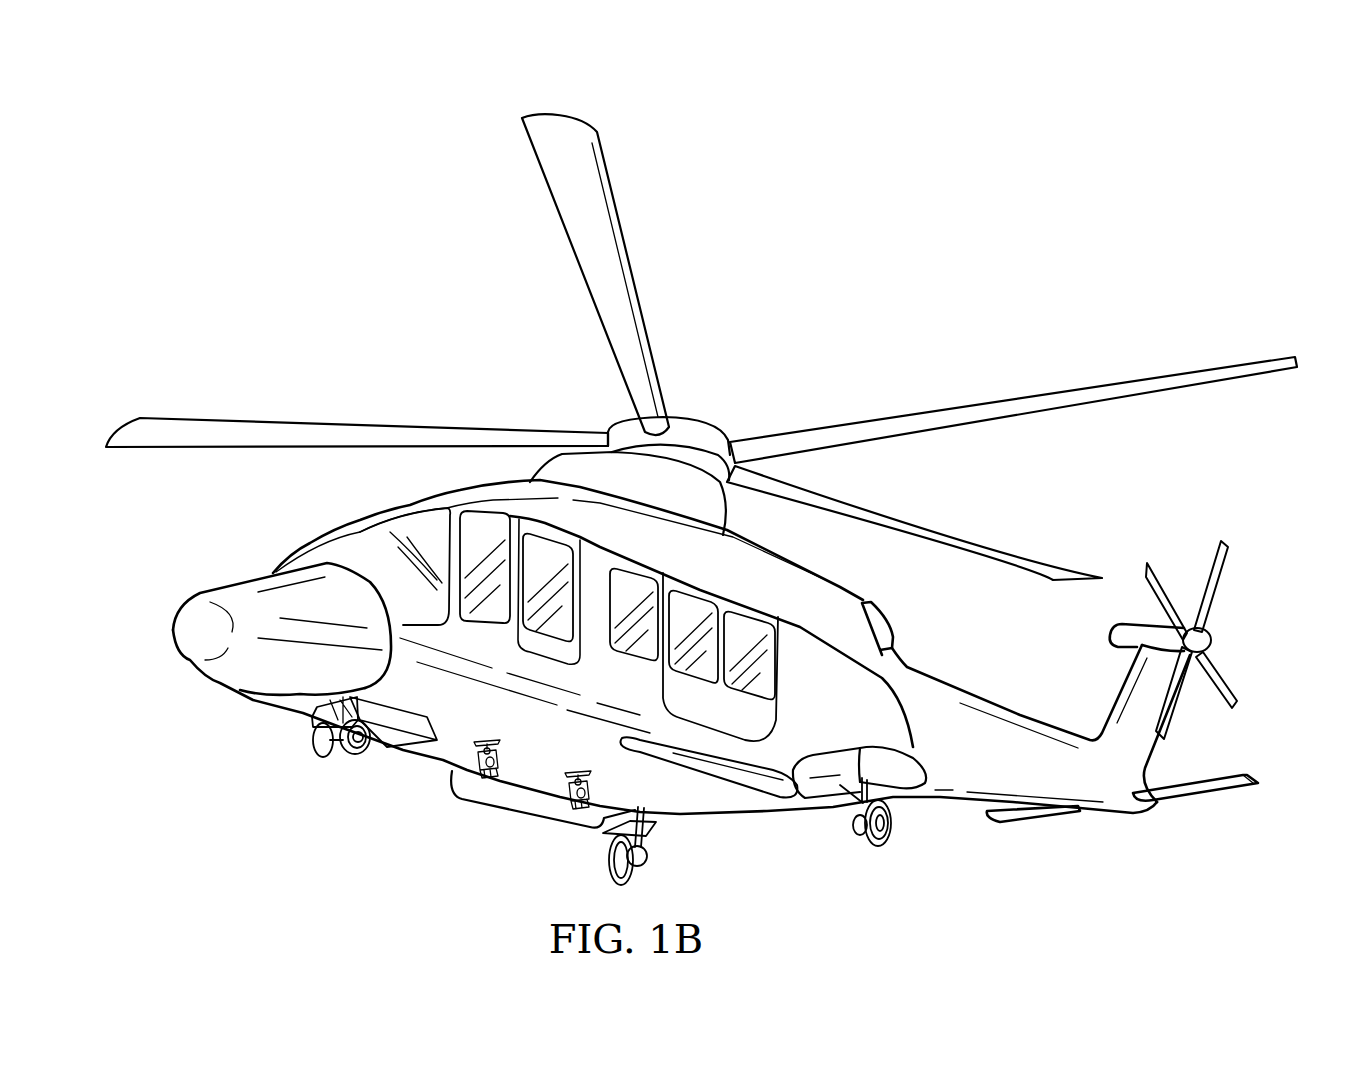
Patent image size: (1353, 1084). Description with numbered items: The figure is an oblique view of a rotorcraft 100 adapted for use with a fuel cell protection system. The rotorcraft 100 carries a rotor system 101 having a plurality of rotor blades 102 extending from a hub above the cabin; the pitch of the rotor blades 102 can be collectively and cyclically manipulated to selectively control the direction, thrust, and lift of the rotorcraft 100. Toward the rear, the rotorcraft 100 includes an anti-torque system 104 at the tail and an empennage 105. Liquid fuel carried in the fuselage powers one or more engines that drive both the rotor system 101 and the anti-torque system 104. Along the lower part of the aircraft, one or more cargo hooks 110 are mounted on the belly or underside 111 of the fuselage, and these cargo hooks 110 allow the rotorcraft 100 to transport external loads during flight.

The rotorcraft 100 is at (283, 110).
The rotor system 101 is at (716, 392).
The rotor blades 102 is at (1003, 413).
The anti-torque system 104 is at (1218, 588).
The empennage 105 is at (957, 780).
The cargo hooks 110 is at (503, 755).
The belly or underside 111 is at (447, 750).